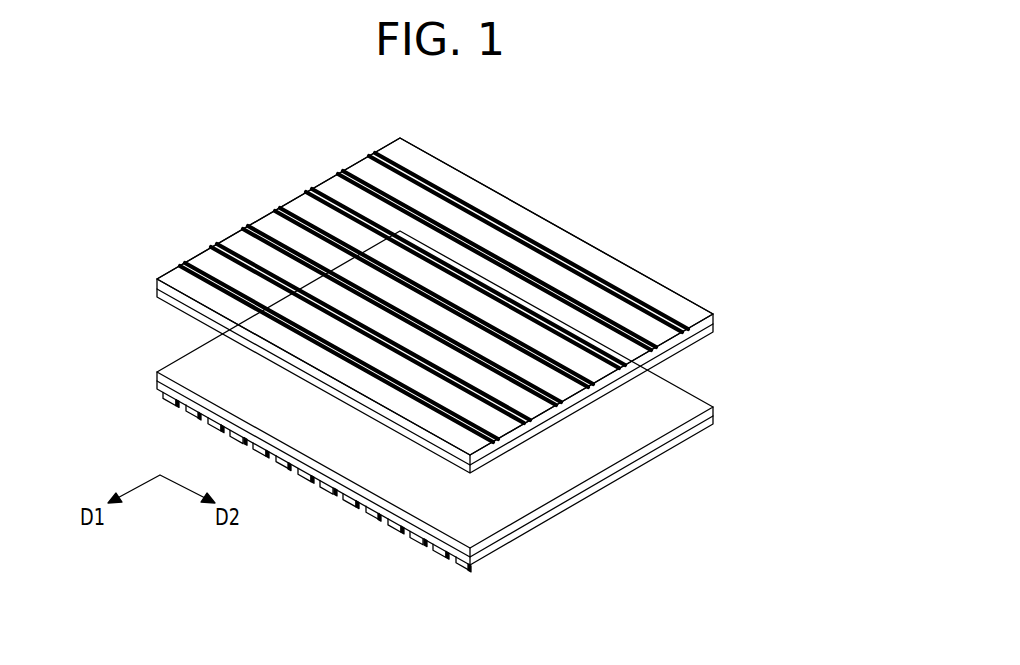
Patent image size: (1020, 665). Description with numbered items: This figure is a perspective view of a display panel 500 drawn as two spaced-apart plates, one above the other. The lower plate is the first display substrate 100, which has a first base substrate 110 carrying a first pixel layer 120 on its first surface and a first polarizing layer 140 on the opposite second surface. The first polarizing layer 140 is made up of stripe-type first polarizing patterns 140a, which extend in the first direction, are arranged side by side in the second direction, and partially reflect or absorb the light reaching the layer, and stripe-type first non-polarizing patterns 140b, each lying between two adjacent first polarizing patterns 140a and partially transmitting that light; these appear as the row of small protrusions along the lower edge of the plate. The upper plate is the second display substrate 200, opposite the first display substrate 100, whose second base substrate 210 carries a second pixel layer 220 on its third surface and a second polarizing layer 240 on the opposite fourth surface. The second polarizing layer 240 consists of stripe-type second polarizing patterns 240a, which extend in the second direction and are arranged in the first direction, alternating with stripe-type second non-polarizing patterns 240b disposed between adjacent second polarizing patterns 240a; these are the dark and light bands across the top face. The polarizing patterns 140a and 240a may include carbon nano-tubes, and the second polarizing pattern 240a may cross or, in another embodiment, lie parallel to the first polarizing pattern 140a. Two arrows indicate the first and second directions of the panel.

The display panel 500 is at (430, 101).
The second display substrate 200 is at (652, 250).
The second base substrate 210 is at (713, 319).
The second pixel layer 220 is at (713, 328).
The second polarizing layer 240 is at (619, 172).
The second polarizing pattern 240a is at (493, 190).
The second non-polarizing pattern 240b is at (555, 243).
The first display substrate 100 is at (665, 482).
The first pixel layer 120 is at (713, 409).
The first base substrate 110 is at (713, 418).
The first polarizing layer 140 is at (466, 616).
The first polarizing pattern 140a is at (415, 538).
The first non-polarizing pattern 140b is at (403, 534).